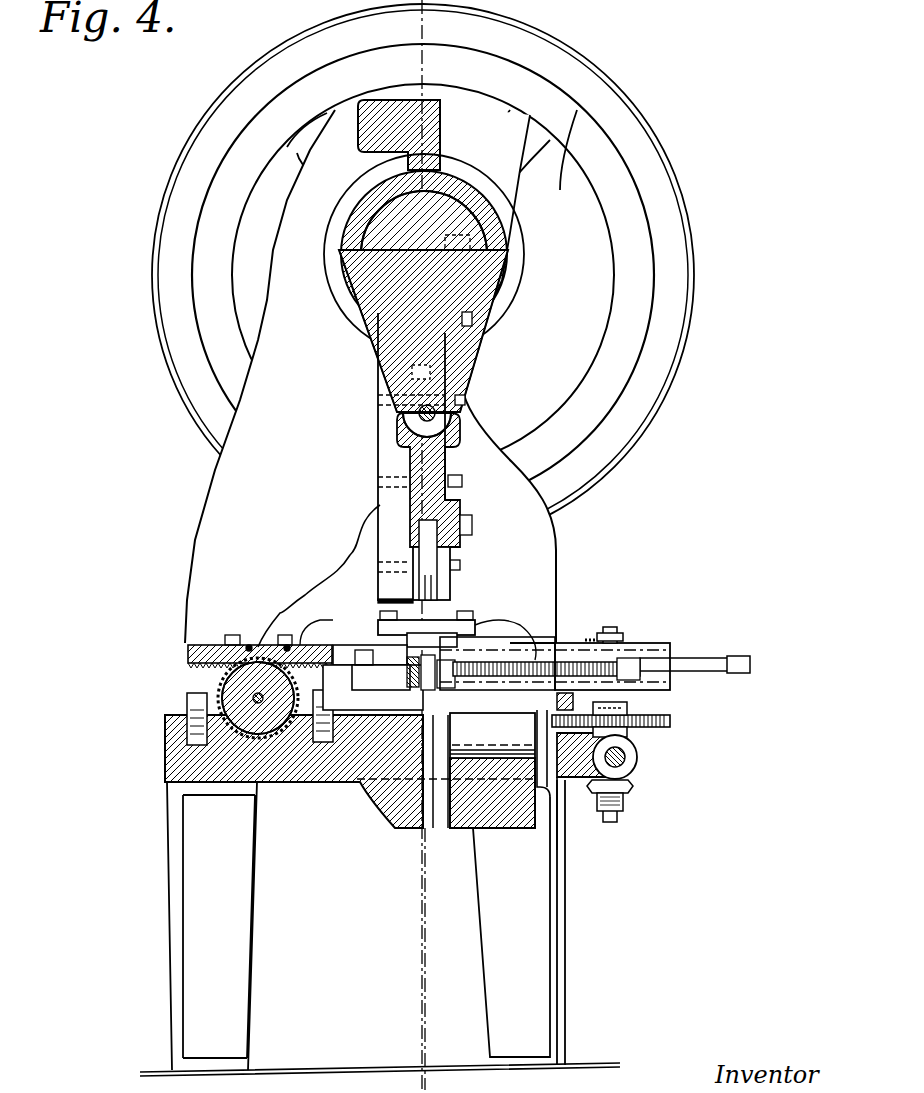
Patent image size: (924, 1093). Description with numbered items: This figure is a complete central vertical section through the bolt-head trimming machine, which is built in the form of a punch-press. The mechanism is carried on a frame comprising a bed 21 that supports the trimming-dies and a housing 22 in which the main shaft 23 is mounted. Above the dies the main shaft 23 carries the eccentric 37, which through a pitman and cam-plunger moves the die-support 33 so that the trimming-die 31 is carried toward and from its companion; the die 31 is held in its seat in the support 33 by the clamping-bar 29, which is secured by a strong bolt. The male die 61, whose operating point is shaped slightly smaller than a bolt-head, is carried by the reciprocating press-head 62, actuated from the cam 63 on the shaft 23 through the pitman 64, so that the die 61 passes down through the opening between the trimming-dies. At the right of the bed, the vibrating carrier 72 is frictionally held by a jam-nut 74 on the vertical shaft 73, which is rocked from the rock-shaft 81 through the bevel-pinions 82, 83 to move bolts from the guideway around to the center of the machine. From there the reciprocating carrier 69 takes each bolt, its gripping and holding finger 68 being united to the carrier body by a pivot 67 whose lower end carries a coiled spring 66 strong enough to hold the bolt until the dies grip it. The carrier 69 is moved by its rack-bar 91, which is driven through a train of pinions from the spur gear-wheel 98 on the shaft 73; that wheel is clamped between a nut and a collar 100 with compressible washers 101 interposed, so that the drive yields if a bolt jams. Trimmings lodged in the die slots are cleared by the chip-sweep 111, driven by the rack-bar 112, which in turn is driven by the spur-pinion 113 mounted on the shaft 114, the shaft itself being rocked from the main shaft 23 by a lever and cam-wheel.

The bed 21 is at (360, 758).
The housing 22 is at (497, 447).
The main shaft 23 is at (385, 318).
The clamping-bar 29 is at (477, 623).
The trimming-die 31 is at (446, 630).
The die-support 33 is at (380, 642).
The eccentric 37 is at (487, 200).
The male die 61 is at (445, 592).
The press-head 62 is at (461, 471).
The cam 63 is at (360, 238).
The pitman 64 is at (466, 352).
The coiled spring 66 is at (398, 668).
The pivot 67 is at (426, 690).
The gripping and holding finger 68 is at (411, 678).
The reciprocating carrier 69 is at (480, 677).
The vibrating carrier 72 is at (589, 640).
The vertical shaft 73 is at (608, 627).
The jam-nut 74 is at (623, 636).
The rock-shaft 81 is at (637, 760).
The bevel-pinion 82 is at (631, 777).
The bevel-pinion 83 is at (603, 808).
The rack-bar 91 is at (525, 668).
The spur gear-wheel 98 is at (671, 722).
The collar 100 is at (630, 733).
The compressible washers 101 is at (636, 714).
The chip-sweep 111 is at (340, 645).
The rack-bar 112 is at (185, 655).
The spur-pinion 113 is at (276, 742).
The shaft 114 is at (260, 703).